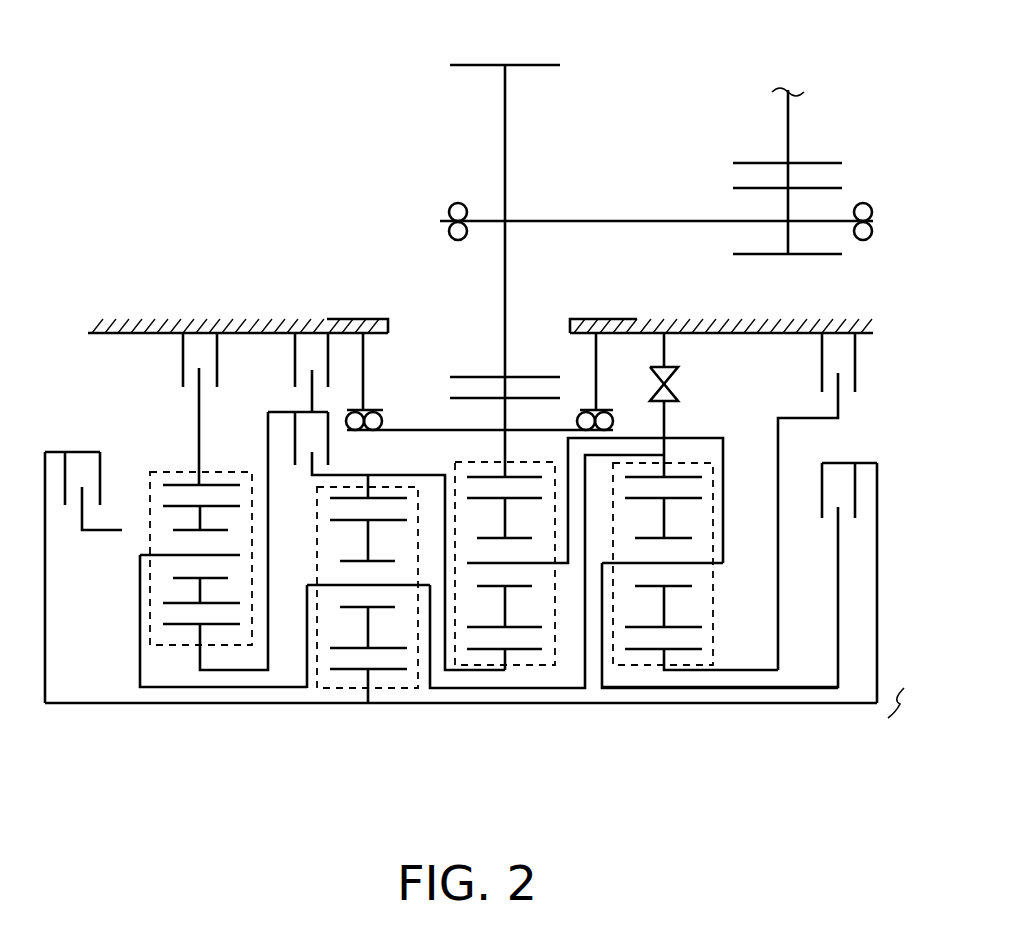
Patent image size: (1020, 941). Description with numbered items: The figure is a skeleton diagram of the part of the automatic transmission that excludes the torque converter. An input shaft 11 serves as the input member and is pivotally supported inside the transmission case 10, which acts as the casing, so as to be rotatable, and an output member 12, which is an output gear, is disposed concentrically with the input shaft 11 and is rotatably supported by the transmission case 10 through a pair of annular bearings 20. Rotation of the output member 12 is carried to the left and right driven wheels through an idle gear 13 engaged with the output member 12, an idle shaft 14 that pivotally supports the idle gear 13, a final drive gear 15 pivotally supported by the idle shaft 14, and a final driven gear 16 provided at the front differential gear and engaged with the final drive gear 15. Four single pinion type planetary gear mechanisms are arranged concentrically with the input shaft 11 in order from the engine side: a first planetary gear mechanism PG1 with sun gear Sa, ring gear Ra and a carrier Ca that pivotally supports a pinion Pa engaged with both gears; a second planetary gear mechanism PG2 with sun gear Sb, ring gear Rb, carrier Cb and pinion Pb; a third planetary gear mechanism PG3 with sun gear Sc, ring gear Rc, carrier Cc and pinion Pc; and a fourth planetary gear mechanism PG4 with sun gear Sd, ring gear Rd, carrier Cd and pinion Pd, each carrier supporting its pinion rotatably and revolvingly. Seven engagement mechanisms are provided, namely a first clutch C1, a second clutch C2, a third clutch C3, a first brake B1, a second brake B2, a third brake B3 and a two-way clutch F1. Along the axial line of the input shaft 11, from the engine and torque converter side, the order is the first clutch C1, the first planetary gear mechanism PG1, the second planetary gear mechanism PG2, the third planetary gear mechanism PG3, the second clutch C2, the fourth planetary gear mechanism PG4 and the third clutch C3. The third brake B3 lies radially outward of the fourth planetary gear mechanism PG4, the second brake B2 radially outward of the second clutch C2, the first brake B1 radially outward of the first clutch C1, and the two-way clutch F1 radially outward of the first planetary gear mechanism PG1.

The transmission case 10 is at (164, 330).
The input shaft 11 is at (474, 720).
The output member 12 is at (558, 398).
The idle gear 13 is at (482, 62).
The idle shaft 14 is at (625, 218).
The final drive gear 15 is at (744, 186).
The final driven gear 16 is at (818, 168).
The annular bearings 20 is at (382, 408).
The first brake B1 is at (816, 501).
The second brake B2 is at (311, 372).
The third brake B3 is at (200, 409).
The first clutch C1 is at (739, 583).
The second clutch C2 is at (386, 541).
The third clutch C3 is at (83, 577).
The two-way clutch F1 is at (678, 390).
The first planetary gear mechanism PG1 is at (651, 670).
The second planetary gear mechanism PG2 is at (479, 670).
The third planetary gear mechanism PG3 is at (340, 690).
The fourth planetary gear mechanism PG4 is at (211, 472).
The ring gear Ra is at (678, 476).
The ring gear Rb is at (524, 478).
The ring gear Rc is at (344, 498).
The ring gear Rd is at (220, 484).
The carrier Ca is at (705, 564).
The carrier Cb is at (530, 564).
The carrier Cc is at (405, 584).
The carrier Cd is at (176, 550).
The pinion Pa is at (692, 627).
The pinion Pb is at (530, 626).
The pinion Pc is at (376, 648).
The pinion Pd is at (176, 603).
The sun gear Sa is at (677, 674).
The sun gear Sb is at (519, 674).
The sun gear Sc is at (391, 674).
The sun gear Sd is at (176, 630).